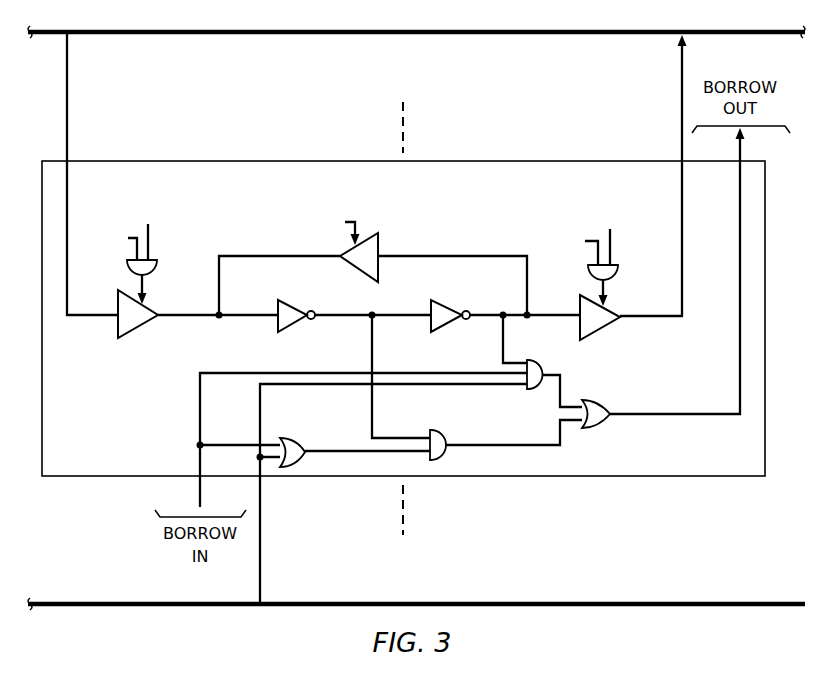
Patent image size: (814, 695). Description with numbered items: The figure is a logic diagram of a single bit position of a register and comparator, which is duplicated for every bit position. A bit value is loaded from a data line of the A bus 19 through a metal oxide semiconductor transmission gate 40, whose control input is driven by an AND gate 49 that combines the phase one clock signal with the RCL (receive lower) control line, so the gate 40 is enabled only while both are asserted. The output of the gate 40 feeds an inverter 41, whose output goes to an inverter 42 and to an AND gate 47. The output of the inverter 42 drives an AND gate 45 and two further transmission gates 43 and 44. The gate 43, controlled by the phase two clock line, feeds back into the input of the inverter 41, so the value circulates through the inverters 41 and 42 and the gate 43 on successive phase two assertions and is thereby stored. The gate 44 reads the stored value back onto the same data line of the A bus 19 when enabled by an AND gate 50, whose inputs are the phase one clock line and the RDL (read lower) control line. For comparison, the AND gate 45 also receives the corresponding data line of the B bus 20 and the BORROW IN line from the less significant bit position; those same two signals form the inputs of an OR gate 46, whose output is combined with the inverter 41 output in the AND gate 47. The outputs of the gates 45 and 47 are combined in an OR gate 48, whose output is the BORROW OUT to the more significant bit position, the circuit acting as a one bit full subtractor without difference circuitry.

The A bus 19 is at (184, 31).
The B bus 20 is at (182, 606).
The MOS transmission gate 40 is at (130, 336).
The inverter 41 is at (285, 304).
The inverter 42 is at (440, 304).
The MOS transmission gate 43 is at (378, 247).
The MOS transmission gate 44 is at (590, 338).
The AND gate 45 is at (530, 359).
The OR gate 46 is at (296, 441).
The AND gate 47 is at (445, 432).
The OR gate 48 is at (596, 402).
The AND gate 49 is at (157, 268).
The AND gate 50 is at (618, 272).